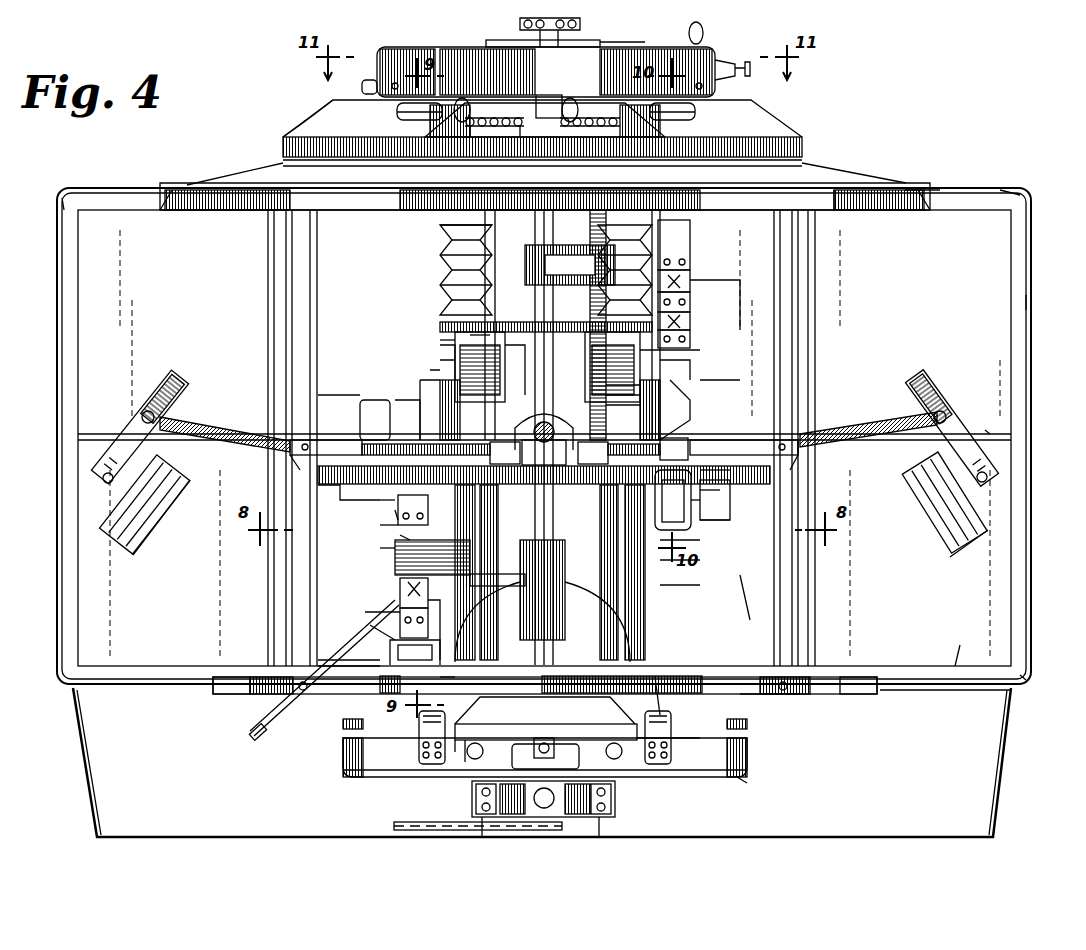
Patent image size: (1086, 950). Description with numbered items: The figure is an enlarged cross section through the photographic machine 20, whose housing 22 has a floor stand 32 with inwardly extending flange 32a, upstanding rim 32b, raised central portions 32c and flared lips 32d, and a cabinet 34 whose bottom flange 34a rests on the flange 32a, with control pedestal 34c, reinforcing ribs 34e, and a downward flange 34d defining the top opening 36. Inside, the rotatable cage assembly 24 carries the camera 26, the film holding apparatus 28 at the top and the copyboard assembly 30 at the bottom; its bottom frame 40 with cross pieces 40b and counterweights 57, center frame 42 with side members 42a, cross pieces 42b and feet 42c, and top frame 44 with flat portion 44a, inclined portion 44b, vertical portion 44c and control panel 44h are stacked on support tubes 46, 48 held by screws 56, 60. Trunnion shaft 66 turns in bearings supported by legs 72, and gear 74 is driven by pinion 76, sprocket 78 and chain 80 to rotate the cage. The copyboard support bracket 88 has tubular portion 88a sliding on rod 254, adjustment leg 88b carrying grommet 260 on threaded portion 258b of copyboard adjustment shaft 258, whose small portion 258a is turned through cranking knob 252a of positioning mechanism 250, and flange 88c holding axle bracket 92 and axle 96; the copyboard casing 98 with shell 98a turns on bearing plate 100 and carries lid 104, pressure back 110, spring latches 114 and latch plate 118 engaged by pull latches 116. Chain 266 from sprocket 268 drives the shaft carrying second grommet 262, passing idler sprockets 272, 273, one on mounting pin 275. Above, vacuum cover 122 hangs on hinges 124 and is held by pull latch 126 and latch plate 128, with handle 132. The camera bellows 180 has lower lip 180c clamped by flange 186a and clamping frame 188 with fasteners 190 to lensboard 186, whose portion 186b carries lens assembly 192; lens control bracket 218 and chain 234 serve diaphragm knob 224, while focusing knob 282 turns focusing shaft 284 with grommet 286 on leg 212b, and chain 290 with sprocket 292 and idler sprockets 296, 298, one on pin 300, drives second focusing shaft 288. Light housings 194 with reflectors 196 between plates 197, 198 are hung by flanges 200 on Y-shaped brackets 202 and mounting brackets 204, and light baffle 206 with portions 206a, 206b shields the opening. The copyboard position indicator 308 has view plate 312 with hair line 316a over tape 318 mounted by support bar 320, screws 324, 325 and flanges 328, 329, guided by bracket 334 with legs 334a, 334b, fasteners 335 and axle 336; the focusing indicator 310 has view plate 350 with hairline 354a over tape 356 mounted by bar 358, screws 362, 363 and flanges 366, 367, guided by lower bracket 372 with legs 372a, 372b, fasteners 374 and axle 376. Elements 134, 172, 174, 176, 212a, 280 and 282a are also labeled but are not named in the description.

The apparatus 20 is at (34, 356).
The housing 22 is at (1031, 246).
The frame assembly 24 is at (240, 354).
The drive shaft 26 is at (440, 265).
The top control block 28 is at (460, 47).
The motor assembly 30 is at (748, 780).
The lower casing 32 is at (996, 770).
The casing flange 32a is at (980, 690).
The casing wall 32b is at (970, 644).
The casing web 32c is at (660, 598).
The casing bracket 32d is at (420, 385).
The outer frame 34 is at (57, 288).
The frame lower corner 34a is at (1028, 670).
The frame right wall 34c is at (1026, 302).
The frame upper corner 34d is at (975, 188).
The frame wall 34e is at (62, 235).
The top rail 36 is at (932, 185).
The bottom bar 40 is at (835, 694).
The bottom bar end 40b is at (780, 694).
The link arm 42 is at (800, 452).
The pivot block 42a is at (544, 439).
The link bracket 42b is at (362, 420).
The link bar 42c is at (300, 455).
The cover 44 is at (768, 115).
The cover top edge 44a is at (333, 100).
The cover slope 44b is at (302, 122).
The cover lower edge 44c is at (290, 137).
The cover base band 44h is at (520, 140).
The left column 46 is at (286, 325).
The right column 48 is at (798, 374).
The pin 56 is at (303, 690).
The bar end piece 57 is at (222, 694).
The pivot pin 60 is at (292, 455).
The guide block 66 is at (505, 453).
The base plate 72 is at (599, 835).
The gear 74 is at (640, 410).
The switch 76 is at (669, 501).
The switch housing 78 is at (673, 500).
The tie rod 80 is at (252, 735).
The bracket 88 is at (535, 680).
The bracket cylinder 88a is at (610, 575).
The bracket arm 88b is at (421, 629).
The bracket arm 88c is at (650, 718).
The support 92 is at (512, 742).
The bearing 96 is at (542, 735).
The motor frame 98 is at (343, 770).
The motor frame tab 98a is at (747, 750).
The gear box 100 is at (472, 790).
The clip 104 is at (747, 722).
The mounting tab 110 is at (343, 752).
The bolt plate 114 is at (362, 777).
The roller 116 is at (470, 760).
The bracket 118 is at (512, 758).
The block end 122 is at (390, 48).
The stub 124 is at (360, 85).
The knob 126 is at (752, 72).
The connector 128 is at (722, 60).
The lever 132 is at (703, 30).
The block body 134 is at (410, 48).
The plate 172 is at (600, 40).
The handle 174 is at (520, 35).
The plate edge 176 is at (604, 44).
The bellows 180 is at (440, 236).
The bellows end 180c is at (440, 320).
The column 186 is at (440, 350).
The column end 186a is at (440, 340).
The lead screw 186b is at (572, 372).
The plate 188 is at (455, 308).
The plate 190 is at (455, 300).
The gear 192 is at (640, 395).
The cylinder 194 is at (148, 538).
The cylinder band 196 is at (148, 515).
The pin 197 is at (170, 475).
The cylinder end 198 is at (130, 556).
The pivot 200 is at (103, 480).
The actuator arm 202 is at (176, 380).
The lever 204 is at (220, 428).
The top plate 206 is at (222, 183).
The plate slope 206a is at (830, 160).
The plate edge 206b is at (840, 190).
The guide rod 212a is at (500, 240).
The guide rod 212b is at (655, 240).
The plate 218 is at (520, 344).
The center block 224 is at (546, 95).
The plate 234 is at (514, 368).
The drive assembly 250 is at (746, 608).
The knob 252a is at (466, 98).
The bar 254 is at (546, 726).
The band 258 is at (395, 402).
The bellows 258a is at (440, 222).
The band 258b is at (544, 476).
The carriage 260 is at (490, 560).
The housing 262 is at (495, 103).
The plate 266 is at (398, 512).
The bar 268 is at (470, 455).
The arm 272 is at (398, 495).
The arm 273 is at (700, 478).
The gear 275 is at (720, 395).
The bracket 280 is at (718, 282).
The knob 282 is at (575, 100).
The rollers 282a is at (595, 117).
The gear 284 is at (640, 385).
The block 286 is at (580, 245).
The plate 288 is at (450, 372).
The switch arm 290 is at (700, 502).
The guide block 292 is at (595, 453).
The plate 296 is at (395, 505).
The arm 298 is at (700, 492).
The plate 300 is at (398, 522).
The bar 308 is at (392, 392).
The drive 310 is at (752, 378).
The plate 312 is at (400, 118).
The clip 316a is at (397, 108).
The bar 318 is at (440, 256).
The plate 320 is at (395, 550).
The plate 324 is at (400, 538).
The plate 325 is at (400, 580).
The plate 328 is at (415, 505).
The plate 329 is at (400, 605).
The bar 334 is at (368, 694).
The bar end 334a is at (453, 685).
The bar arm 334b is at (392, 640).
The bracket 335 is at (415, 644).
The plate 336 is at (395, 618).
The plate 350 is at (692, 118).
The clip 354a is at (695, 108).
The bar 356 is at (690, 352).
The plate 358 is at (690, 296).
The plate 362 is at (690, 275).
The plate 363 is at (690, 316).
The plate 366 is at (672, 255).
The plate 367 is at (690, 334).
The switch 372 is at (712, 520).
The switch arm 372a is at (705, 532).
The switch arm 372b is at (689, 541).
The block 374 is at (672, 440).
The bar 376 is at (720, 445).